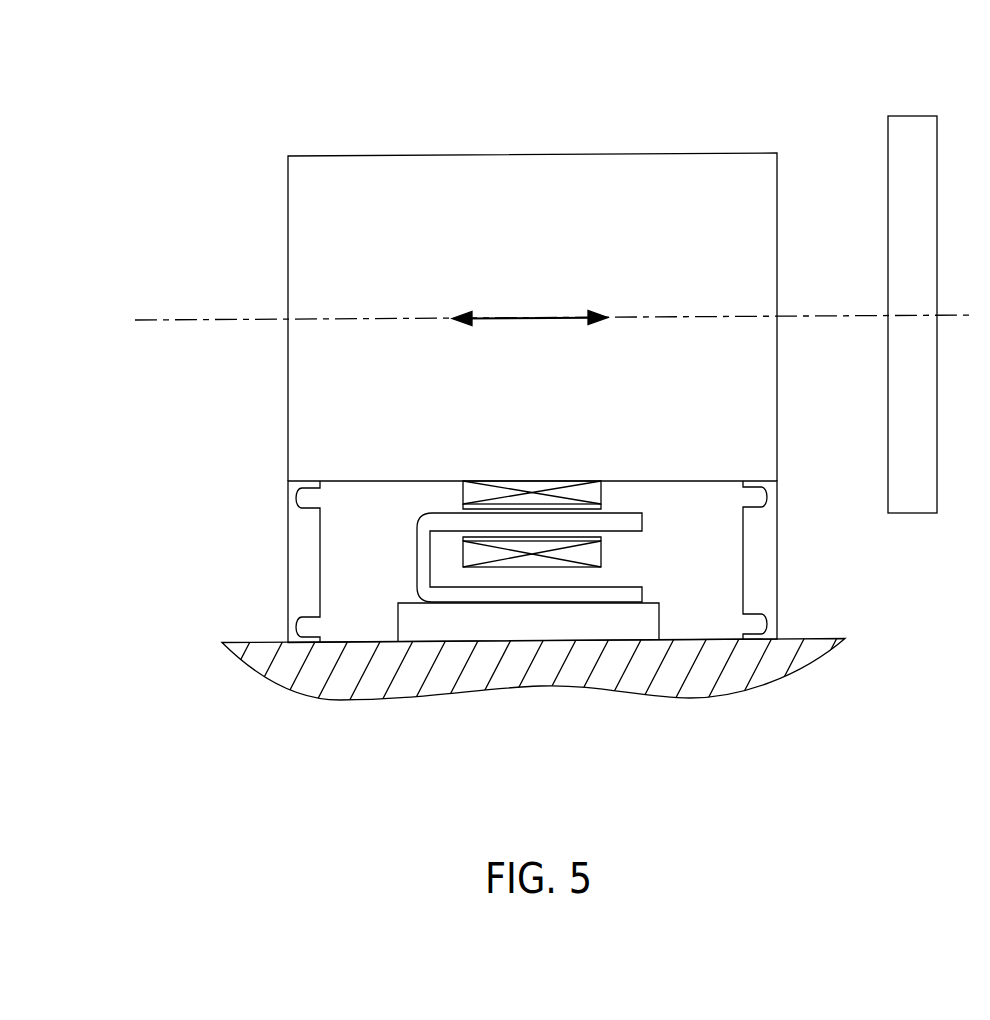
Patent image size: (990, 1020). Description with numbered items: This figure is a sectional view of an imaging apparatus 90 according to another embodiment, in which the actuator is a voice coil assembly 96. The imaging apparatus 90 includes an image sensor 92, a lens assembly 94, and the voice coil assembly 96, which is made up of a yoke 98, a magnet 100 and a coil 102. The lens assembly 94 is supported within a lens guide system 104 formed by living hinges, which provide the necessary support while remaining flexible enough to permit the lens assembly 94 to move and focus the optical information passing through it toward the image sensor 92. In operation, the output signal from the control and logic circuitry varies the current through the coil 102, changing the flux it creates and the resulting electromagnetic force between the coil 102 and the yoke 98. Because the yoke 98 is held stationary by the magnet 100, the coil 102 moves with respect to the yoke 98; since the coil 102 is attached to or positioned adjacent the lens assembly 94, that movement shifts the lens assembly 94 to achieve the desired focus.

The imaging apparatus 90 is at (88, 129).
The image sensor 92 is at (918, 116).
The lens assembly 94 is at (650, 180).
The voice coil assembly 96 is at (716, 591).
The yoke 98 is at (415, 537).
The magnet 100 is at (575, 623).
The coil 102 is at (602, 493).
The lens guide system 104 is at (766, 535).